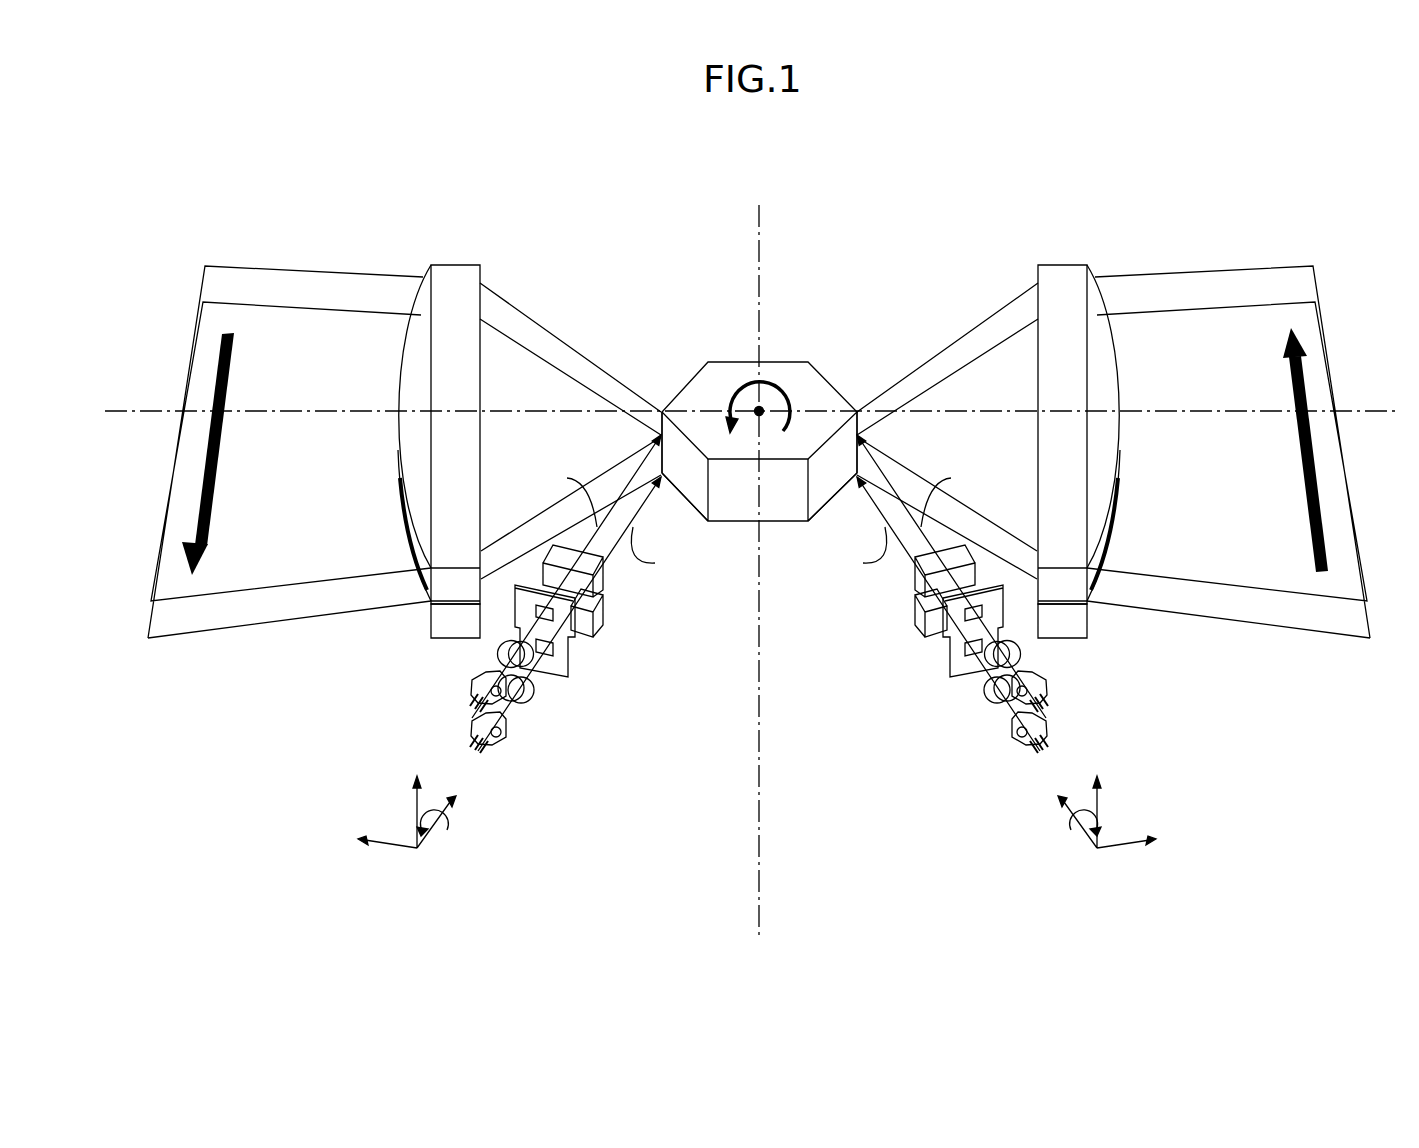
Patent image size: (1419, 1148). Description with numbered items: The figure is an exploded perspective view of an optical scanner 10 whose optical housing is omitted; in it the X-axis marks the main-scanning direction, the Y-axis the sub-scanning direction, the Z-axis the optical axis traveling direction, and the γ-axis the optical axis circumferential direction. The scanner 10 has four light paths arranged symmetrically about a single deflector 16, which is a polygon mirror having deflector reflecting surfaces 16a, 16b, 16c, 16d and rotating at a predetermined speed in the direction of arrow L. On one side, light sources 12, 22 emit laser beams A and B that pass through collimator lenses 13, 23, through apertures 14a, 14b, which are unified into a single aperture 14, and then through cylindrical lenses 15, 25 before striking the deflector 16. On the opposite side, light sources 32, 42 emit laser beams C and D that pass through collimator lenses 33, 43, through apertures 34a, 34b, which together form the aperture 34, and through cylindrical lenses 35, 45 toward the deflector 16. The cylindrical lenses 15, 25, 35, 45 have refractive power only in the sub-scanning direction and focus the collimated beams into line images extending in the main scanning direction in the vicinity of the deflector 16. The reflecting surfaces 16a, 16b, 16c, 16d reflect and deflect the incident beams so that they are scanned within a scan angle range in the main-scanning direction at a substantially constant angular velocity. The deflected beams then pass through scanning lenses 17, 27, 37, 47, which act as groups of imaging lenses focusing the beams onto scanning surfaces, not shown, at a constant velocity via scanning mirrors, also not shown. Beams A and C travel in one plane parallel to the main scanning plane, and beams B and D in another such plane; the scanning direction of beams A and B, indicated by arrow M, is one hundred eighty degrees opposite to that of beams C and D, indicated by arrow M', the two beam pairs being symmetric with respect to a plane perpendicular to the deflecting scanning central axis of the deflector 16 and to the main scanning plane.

The optical scanner 10 is at (234, 149).
The light source 12 is at (1062, 695).
The collimator lens 13 is at (1012, 655).
The aperture 14 is at (945, 660).
The aperture 14a is at (925, 632).
The aperture 14b is at (971, 655).
The cylindrical lens 15 is at (915, 580).
The deflector 16 is at (782, 378).
The deflector reflecting surface 16a is at (857, 407).
The deflector reflecting surface 16b is at (847, 477).
The deflector reflecting surface 16c is at (660, 406).
The deflector reflecting surface 16d is at (670, 478).
The scanning lens 17 is at (1075, 583).
The light source 22 is at (1023, 756).
The collimator lens 23 is at (1000, 702).
The cylindrical lens 25 is at (917, 612).
The scanning lens 27 is at (1073, 625).
The light source 32 is at (456, 695).
The collimator lens 33 is at (506, 655).
The aperture 34 is at (573, 662).
The aperture 34a is at (592, 637).
The aperture 34b is at (549, 658).
The cylindrical lens 35 is at (604, 583).
The scanning lens 37 is at (443, 583).
The light source 42 is at (495, 756).
The collimator lens 43 is at (518, 702).
The cylindrical lens 45 is at (601, 613).
The scanning lens 47 is at (445, 627).